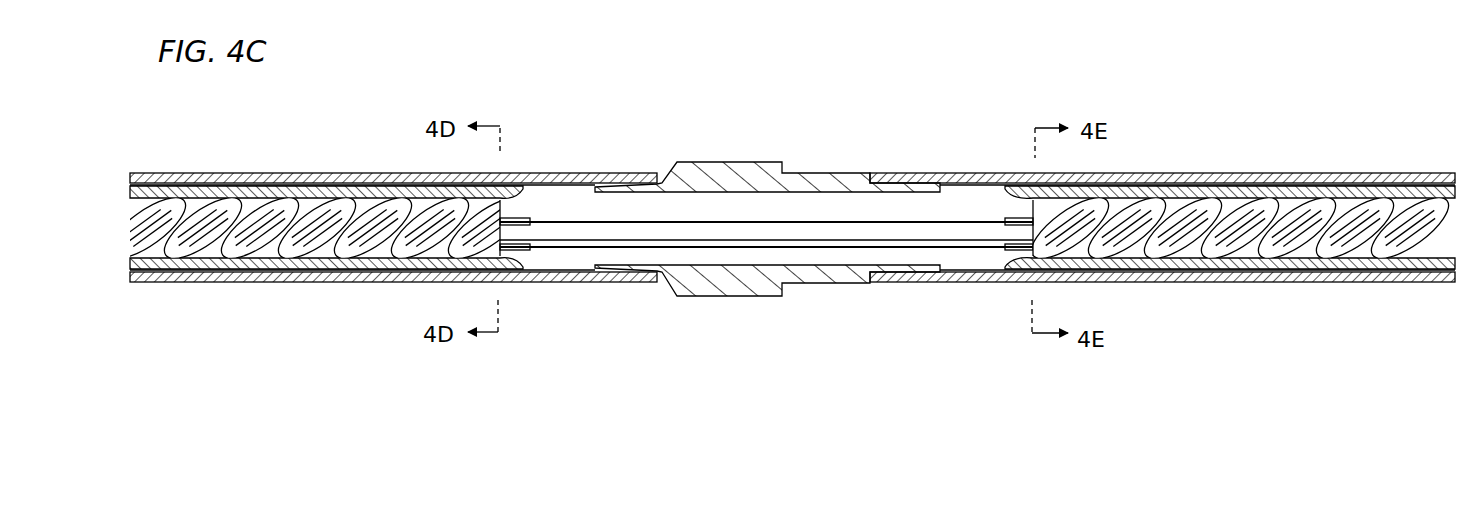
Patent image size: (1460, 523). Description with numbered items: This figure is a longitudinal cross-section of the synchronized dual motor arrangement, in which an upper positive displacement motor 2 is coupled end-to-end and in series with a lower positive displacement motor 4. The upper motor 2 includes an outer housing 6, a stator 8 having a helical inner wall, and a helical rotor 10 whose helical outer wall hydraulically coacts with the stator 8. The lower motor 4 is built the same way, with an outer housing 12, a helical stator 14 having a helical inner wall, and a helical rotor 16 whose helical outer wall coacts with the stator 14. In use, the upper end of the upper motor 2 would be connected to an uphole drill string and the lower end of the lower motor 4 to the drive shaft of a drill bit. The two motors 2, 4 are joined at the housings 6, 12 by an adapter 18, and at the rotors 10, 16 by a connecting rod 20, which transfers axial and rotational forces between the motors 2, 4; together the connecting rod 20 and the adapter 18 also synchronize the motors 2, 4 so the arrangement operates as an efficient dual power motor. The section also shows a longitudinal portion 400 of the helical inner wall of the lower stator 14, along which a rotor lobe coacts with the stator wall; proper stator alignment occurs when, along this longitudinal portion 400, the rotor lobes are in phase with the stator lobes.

The upper positive displacement motor 2 is at (1212, 150).
The lower positive displacement motor 4 is at (368, 142).
The outer housing 6 is at (1433, 180).
The stator 8 is at (1381, 193).
The helical rotor 10 is at (1313, 215).
The outer housing 12 is at (162, 180).
The helical stator 14 is at (241, 190).
The helical rotor 16 is at (315, 215).
The adapter 18 is at (746, 160).
The connecting rod 20 is at (819, 218).
The longitudinal portion 400 is at (294, 264).